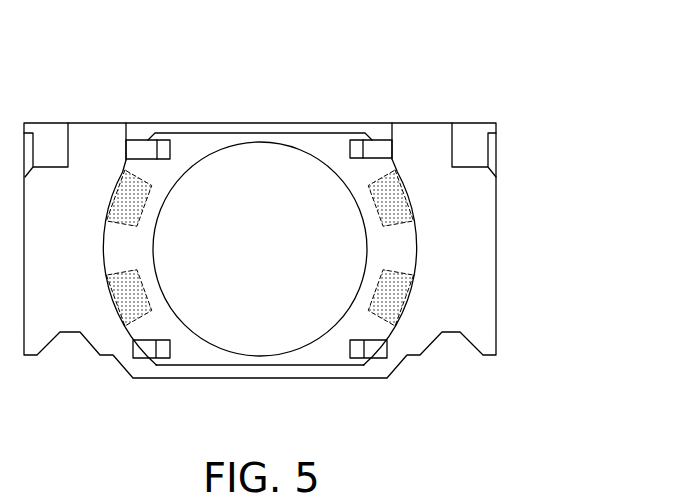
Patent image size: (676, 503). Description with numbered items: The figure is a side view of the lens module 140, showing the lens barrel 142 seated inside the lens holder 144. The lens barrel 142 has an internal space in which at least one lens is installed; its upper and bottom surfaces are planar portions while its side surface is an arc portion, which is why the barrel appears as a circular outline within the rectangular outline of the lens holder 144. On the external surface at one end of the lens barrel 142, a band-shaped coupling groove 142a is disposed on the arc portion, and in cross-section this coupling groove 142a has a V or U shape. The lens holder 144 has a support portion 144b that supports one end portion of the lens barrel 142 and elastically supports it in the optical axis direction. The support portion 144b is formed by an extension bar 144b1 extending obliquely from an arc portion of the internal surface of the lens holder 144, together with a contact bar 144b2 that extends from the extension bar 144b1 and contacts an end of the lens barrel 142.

The lens module 140 is at (177, 25).
The lens barrel 142 is at (322, 357).
The coupling groove 142a is at (412, 205).
The lens holder 144 is at (487, 201).
The support portion 144b is at (450, 66).
The extension bar 144b1 is at (378, 146).
The contact bar 144b2 is at (353, 140).